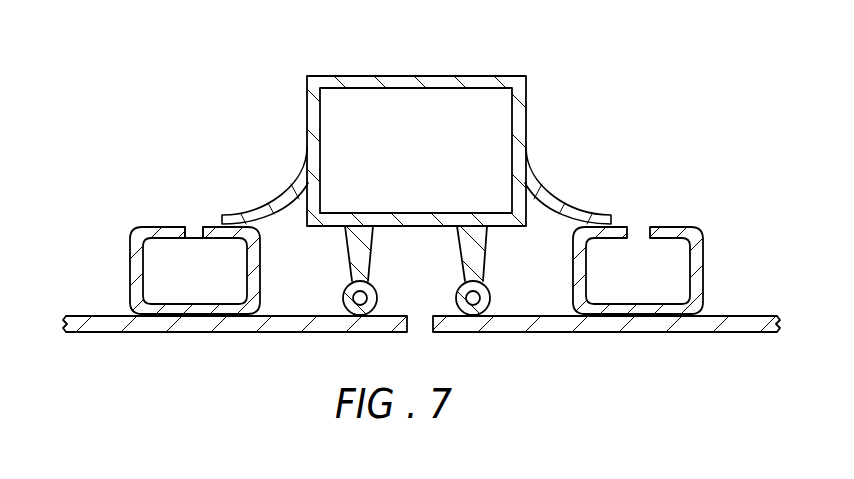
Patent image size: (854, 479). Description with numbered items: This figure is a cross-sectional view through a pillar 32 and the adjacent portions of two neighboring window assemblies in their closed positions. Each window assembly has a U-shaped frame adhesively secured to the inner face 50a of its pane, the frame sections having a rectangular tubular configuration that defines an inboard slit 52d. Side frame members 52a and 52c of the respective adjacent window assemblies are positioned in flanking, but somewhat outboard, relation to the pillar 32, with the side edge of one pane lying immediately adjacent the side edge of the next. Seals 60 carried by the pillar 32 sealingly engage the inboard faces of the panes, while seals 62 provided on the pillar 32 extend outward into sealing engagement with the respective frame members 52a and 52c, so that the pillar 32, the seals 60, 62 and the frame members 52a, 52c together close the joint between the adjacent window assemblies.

The pillar 32 is at (365, 76).
The seal 62 is at (280, 190).
The frame section 52a is at (123, 238).
The inboard slit 52d is at (185, 237).
The frame section 52c is at (617, 227).
The seal 60 is at (485, 305).
The inner face 50a is at (250, 333).